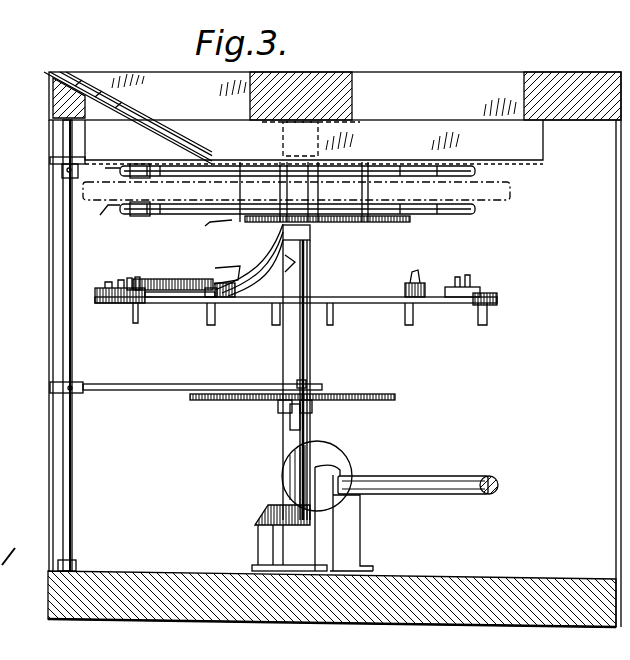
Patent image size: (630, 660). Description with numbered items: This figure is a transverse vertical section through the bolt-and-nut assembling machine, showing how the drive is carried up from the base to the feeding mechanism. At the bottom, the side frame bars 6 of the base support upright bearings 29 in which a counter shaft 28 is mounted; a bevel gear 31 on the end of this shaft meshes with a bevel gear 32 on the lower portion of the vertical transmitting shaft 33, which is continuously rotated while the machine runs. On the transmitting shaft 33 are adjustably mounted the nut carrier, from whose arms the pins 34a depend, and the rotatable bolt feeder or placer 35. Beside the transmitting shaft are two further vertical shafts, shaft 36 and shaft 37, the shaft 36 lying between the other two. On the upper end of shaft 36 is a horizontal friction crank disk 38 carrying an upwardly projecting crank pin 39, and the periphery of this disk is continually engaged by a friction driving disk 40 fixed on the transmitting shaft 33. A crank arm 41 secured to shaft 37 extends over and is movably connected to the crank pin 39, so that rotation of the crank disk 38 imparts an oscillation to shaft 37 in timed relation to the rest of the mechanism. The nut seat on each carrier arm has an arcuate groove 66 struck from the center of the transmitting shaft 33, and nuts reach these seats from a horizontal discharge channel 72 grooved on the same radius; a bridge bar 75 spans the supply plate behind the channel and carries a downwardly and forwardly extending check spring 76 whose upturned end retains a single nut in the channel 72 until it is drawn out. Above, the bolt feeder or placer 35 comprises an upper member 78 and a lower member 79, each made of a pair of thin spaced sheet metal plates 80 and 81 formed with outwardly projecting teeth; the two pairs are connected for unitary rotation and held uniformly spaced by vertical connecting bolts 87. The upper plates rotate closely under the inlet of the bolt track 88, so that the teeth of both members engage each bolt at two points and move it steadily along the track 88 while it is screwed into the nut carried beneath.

The side frame bar 6 is at (492, 581).
The counter shaft 28 is at (398, 476).
The upright bearings 29 is at (360, 512).
The bevel gear 31 is at (335, 455).
The bevel gear 32 is at (255, 513).
The vertical transmitting shaft 33 is at (310, 330).
The pins 34a is at (455, 345).
The rotatable bolt feeder or placer 35 is at (304, 192).
The vertical shaft 36 is at (290, 425).
The vertical shaft 37 is at (72, 366).
The friction crank disk 38 is at (278, 405).
The crank pin 39 is at (306, 380).
The friction driving disk 40 is at (192, 400).
The crank arm 41 is at (182, 384).
The arcuate groove 66 is at (380, 318).
The discharge channel 72 is at (136, 278).
The bridge bar 75 is at (275, 262).
The check spring 76 is at (215, 270).
The upper member 78 is at (150, 166).
The lower member 79 is at (213, 217).
The sheet metal plate 80 is at (117, 197).
The sheet metal plate 81 is at (140, 226).
The vertical connecting bolts 87 is at (368, 190).
The bolt track 88 is at (314, 142).